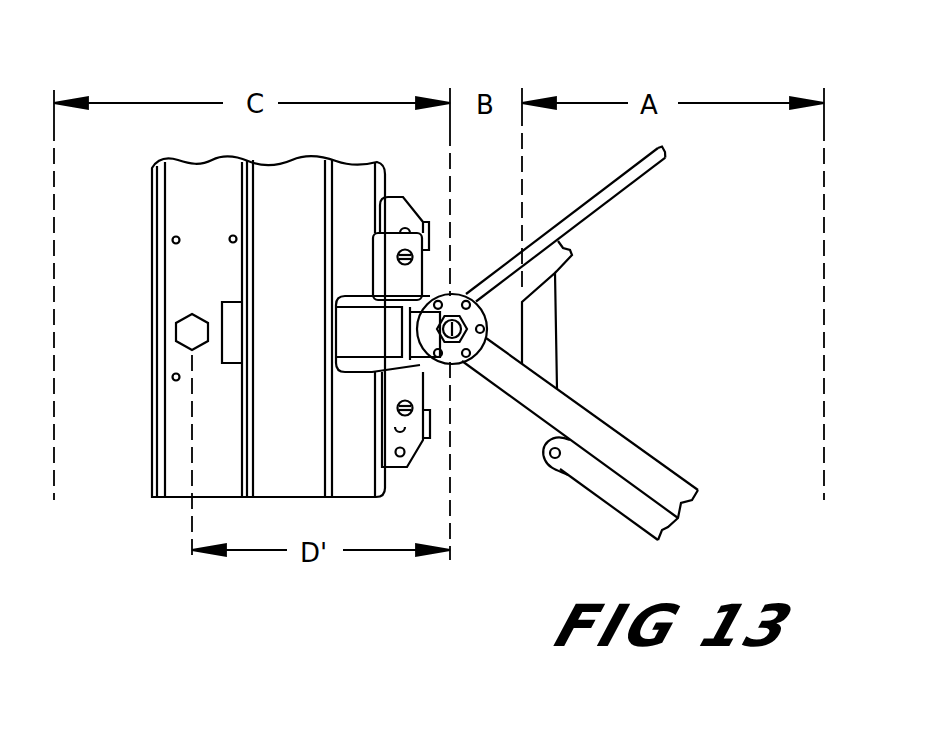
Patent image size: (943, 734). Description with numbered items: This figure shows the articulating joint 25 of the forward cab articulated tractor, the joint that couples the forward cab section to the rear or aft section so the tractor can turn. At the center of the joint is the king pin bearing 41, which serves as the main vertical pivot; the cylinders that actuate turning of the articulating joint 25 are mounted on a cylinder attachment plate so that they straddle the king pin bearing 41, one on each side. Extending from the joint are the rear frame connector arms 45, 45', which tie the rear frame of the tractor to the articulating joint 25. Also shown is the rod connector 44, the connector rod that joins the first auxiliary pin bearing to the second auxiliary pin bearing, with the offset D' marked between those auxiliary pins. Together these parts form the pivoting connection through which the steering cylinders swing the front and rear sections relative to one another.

The articulating joint 25 is at (461, 387).
The king pin bearing 41 is at (484, 318).
The rod connector 44 is at (230, 322).
The rear frame connector arm to articulated joint 45 is at (565, 224).
The rear frame connector arm to articulated joint 45' is at (580, 439).